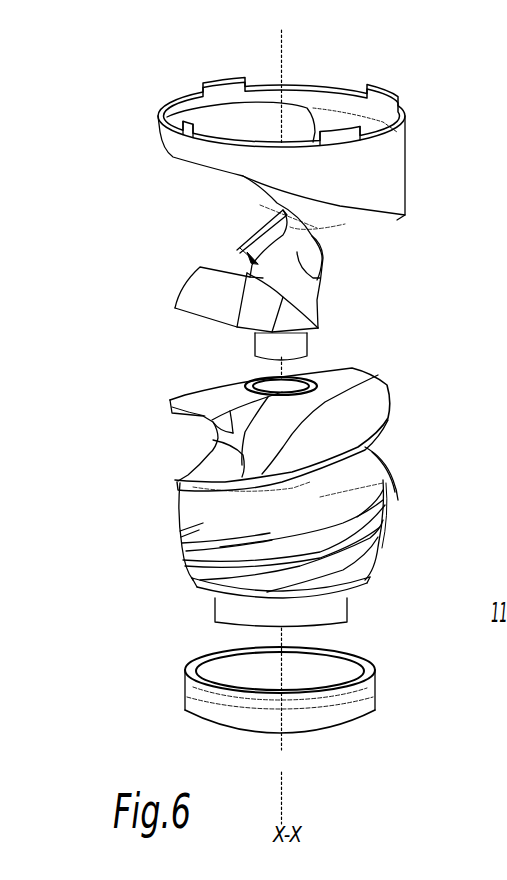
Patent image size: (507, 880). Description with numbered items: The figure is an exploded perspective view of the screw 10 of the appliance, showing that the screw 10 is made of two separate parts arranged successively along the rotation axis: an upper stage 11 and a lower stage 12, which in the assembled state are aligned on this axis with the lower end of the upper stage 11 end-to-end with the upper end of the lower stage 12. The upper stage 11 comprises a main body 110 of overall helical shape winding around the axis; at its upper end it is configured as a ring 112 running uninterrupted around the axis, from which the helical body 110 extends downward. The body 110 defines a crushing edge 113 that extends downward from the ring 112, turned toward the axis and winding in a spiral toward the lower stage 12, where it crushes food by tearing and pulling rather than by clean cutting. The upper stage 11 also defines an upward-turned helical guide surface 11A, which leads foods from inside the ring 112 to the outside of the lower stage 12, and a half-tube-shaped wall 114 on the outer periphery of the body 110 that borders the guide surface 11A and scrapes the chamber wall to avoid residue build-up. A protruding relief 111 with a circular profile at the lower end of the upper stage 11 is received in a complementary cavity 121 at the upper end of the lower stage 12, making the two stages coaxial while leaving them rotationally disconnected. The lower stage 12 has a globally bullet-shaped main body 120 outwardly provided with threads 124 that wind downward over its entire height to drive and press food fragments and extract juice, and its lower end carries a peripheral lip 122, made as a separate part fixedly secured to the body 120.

The screw 10 is at (158, 90).
The upper stage 11 is at (176, 283).
The guide surface 11A is at (237, 247).
The main body 110 is at (188, 313).
The protruding relief 111 is at (297, 347).
The ring 112 is at (175, 135).
The crushing edge 113 is at (250, 178).
The wall 114 is at (393, 190).
The lower stage 12 is at (177, 510).
The main body 120 is at (350, 493).
The cavity 121 is at (377, 377).
The peripheral lip 122 is at (367, 690).
The threads 124 is at (383, 507).